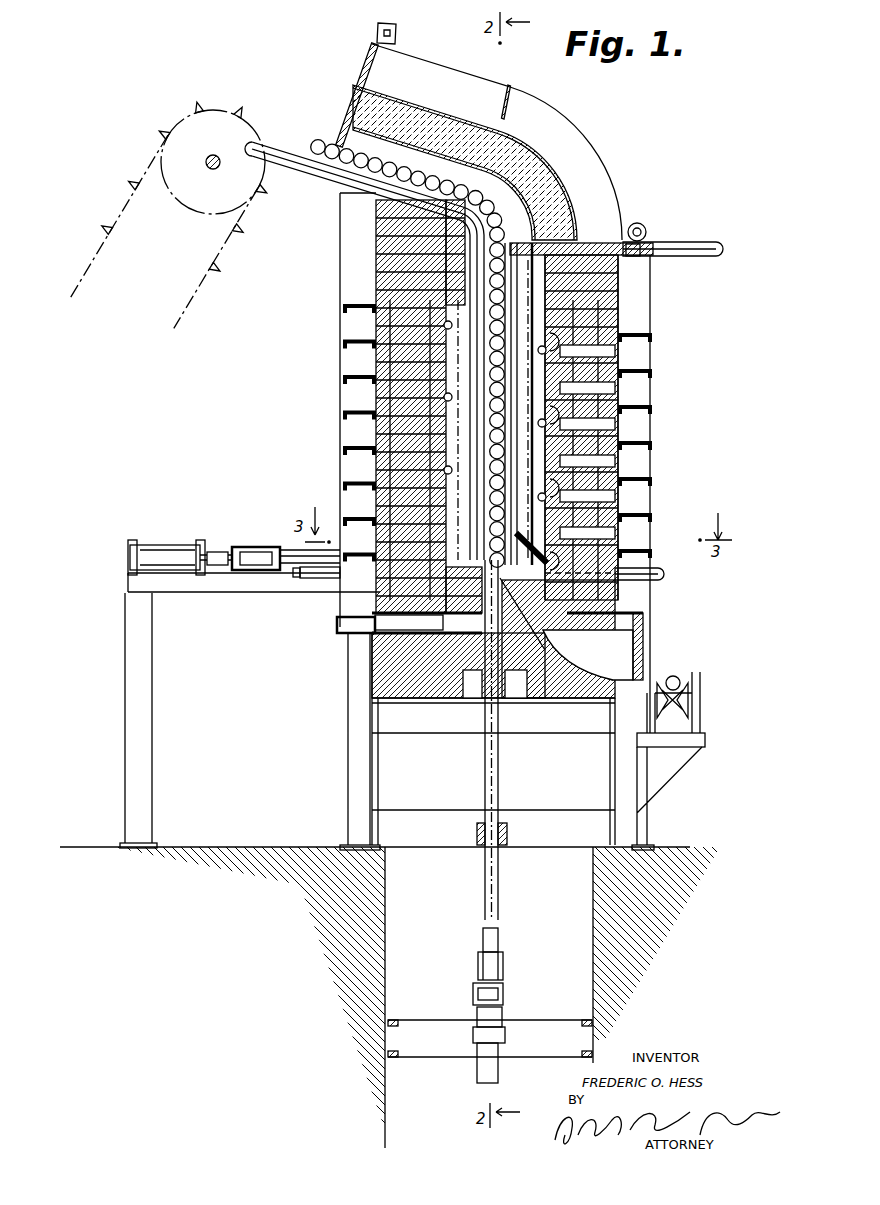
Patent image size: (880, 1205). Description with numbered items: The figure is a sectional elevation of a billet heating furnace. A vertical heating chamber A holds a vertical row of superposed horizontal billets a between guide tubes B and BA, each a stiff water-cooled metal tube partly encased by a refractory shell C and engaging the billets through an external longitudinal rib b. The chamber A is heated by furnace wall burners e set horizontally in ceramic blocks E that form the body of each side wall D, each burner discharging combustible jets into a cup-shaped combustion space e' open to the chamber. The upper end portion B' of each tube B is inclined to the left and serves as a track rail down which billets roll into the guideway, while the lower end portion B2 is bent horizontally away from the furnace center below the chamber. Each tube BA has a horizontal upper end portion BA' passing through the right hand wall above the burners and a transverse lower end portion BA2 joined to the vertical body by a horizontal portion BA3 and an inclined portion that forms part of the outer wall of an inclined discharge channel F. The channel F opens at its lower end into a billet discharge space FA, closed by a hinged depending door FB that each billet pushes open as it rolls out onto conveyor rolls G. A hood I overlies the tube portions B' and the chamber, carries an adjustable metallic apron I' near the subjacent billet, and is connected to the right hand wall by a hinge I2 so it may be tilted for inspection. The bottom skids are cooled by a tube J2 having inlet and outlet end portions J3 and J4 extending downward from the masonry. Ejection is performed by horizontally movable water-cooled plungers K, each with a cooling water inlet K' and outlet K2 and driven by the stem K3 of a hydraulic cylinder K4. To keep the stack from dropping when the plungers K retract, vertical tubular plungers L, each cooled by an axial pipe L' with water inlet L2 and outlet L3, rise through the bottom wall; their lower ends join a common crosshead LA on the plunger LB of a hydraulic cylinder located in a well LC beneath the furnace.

The upper hood portion I is at (503, 149).
The metallic apron or shield I' is at (344, 85).
The hinge connection I2 is at (638, 223).
The horizontal upper end portion BA' is at (673, 231).
The upper end portion B' is at (364, 351).
The guide tube B is at (439, 404).
The external longitudinal rib or vane b is at (487, 206).
The billet a is at (490, 499).
The shell of refractory material C is at (393, 317).
The side wall D is at (372, 382).
The vertical heating chamber A is at (366, 432).
The ceramic block E is at (397, 462).
The guide tube BA is at (578, 427).
The furnace wall burner e is at (618, 451).
The combustion space e' is at (533, 423).
The transverse lower end portion BA2 is at (657, 568).
The horizontal upper end portion BA3 is at (526, 553).
The cooling tube J2 is at (457, 645).
The inclined discharge channel F is at (546, 601).
The billet discharge space FA is at (609, 659).
The depending door FB is at (643, 648).
The inlet end portion J3 is at (460, 703).
The outlet end portion J4 is at (543, 705).
The lower end portion B2 is at (323, 578).
The conveyor rolls G is at (680, 700).
The vertical tubular plunger L is at (509, 740).
The pipe L' is at (519, 740).
The well LC is at (390, 898).
The water inlet L2 is at (482, 968).
The water outlet L3 is at (504, 968).
The crosshead LA is at (505, 995).
The plunger of hydraulic cylinder LB is at (490, 1072).
The hydraulic cylinder K4 is at (158, 546).
The stem K3 is at (226, 550).
The cooling water outlet K2 is at (296, 547).
The plunger K is at (302, 532).
The cooling water inlet K' is at (278, 599).